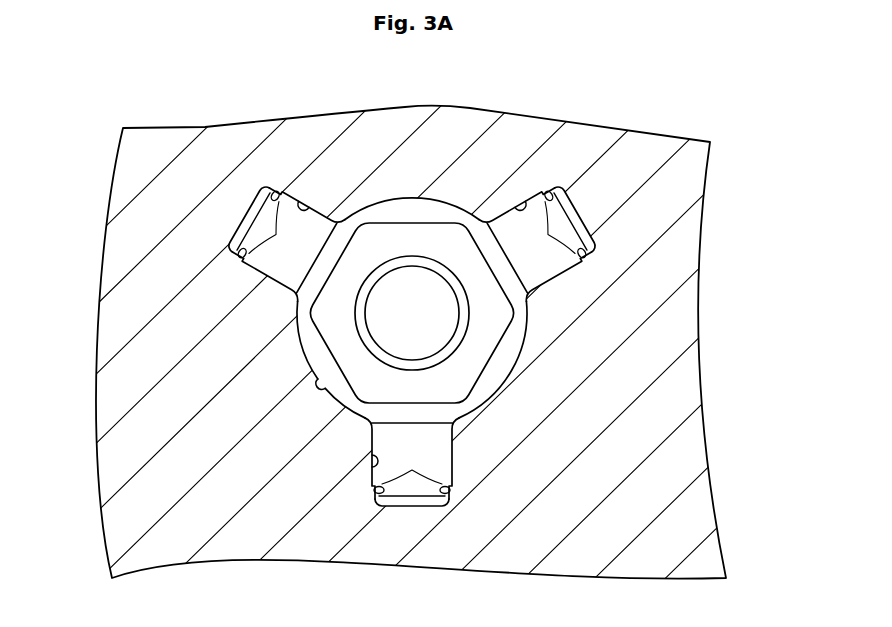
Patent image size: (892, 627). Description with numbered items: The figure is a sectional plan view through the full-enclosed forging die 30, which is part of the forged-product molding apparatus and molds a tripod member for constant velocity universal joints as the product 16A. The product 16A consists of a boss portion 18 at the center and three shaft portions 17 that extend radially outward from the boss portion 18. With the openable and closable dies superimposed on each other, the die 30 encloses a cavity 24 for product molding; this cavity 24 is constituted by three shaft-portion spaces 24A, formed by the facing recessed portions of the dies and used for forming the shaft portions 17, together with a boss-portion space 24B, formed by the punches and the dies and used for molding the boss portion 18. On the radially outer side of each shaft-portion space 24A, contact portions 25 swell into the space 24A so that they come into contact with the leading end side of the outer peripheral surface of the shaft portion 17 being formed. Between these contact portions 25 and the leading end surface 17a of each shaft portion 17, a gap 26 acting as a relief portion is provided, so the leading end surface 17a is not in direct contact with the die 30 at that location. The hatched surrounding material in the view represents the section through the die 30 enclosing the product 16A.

The product 16A is at (440, 200).
The shaft portion 17 is at (266, 262).
The leading end surface 17a is at (247, 217).
The boss portion 18 is at (508, 363).
The cavity 24 is at (381, 209).
The shaft-portion space 24A is at (298, 205).
The boss-portion space 24B is at (319, 390).
The contact portion 25 is at (284, 236).
The gap (relief portion) 26 is at (238, 213).
The full-enclosed forging die 30 is at (700, 289).